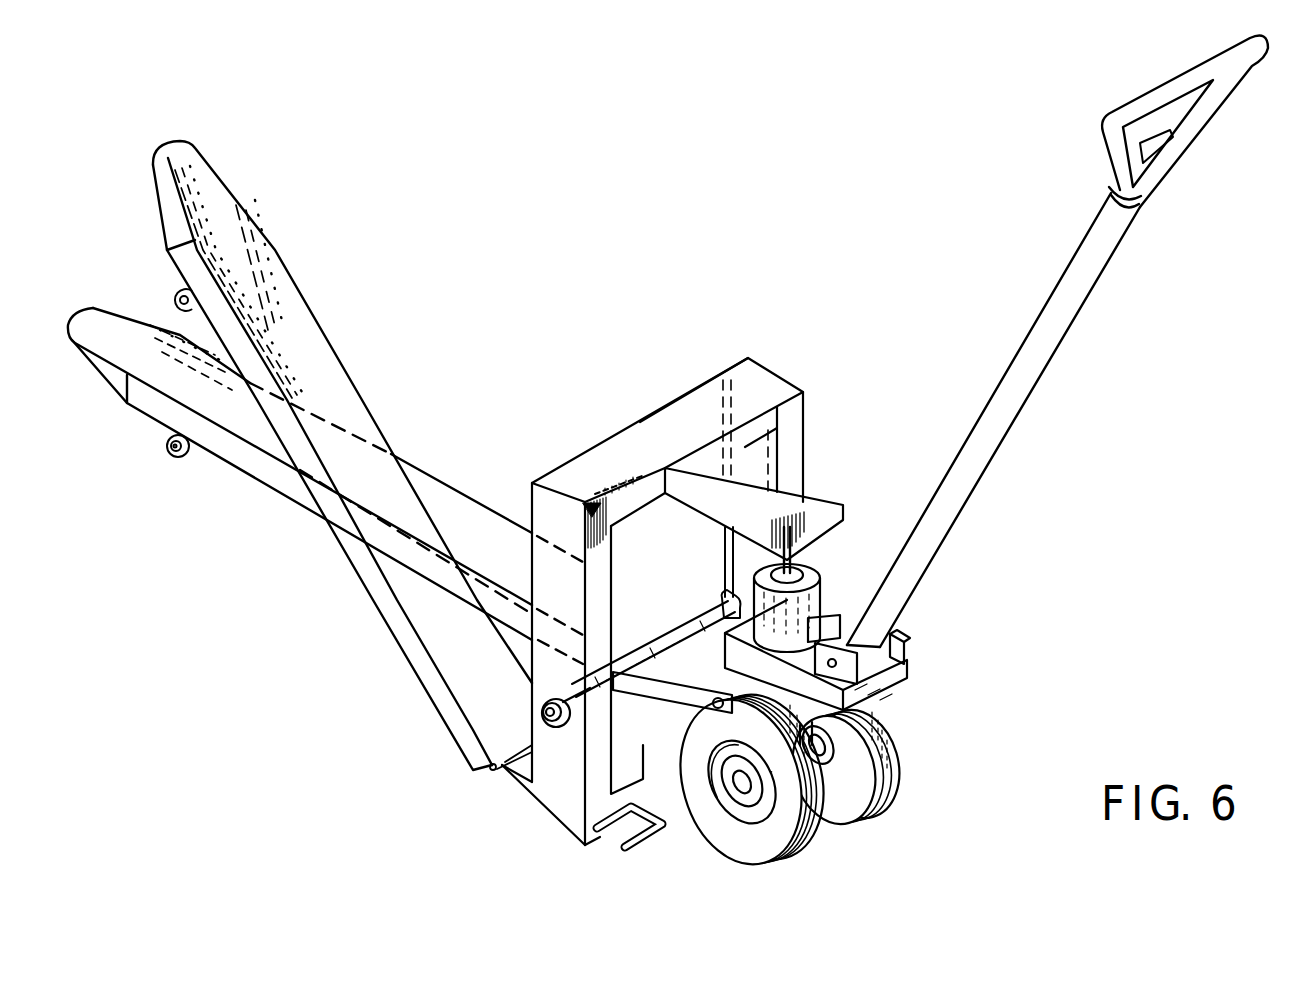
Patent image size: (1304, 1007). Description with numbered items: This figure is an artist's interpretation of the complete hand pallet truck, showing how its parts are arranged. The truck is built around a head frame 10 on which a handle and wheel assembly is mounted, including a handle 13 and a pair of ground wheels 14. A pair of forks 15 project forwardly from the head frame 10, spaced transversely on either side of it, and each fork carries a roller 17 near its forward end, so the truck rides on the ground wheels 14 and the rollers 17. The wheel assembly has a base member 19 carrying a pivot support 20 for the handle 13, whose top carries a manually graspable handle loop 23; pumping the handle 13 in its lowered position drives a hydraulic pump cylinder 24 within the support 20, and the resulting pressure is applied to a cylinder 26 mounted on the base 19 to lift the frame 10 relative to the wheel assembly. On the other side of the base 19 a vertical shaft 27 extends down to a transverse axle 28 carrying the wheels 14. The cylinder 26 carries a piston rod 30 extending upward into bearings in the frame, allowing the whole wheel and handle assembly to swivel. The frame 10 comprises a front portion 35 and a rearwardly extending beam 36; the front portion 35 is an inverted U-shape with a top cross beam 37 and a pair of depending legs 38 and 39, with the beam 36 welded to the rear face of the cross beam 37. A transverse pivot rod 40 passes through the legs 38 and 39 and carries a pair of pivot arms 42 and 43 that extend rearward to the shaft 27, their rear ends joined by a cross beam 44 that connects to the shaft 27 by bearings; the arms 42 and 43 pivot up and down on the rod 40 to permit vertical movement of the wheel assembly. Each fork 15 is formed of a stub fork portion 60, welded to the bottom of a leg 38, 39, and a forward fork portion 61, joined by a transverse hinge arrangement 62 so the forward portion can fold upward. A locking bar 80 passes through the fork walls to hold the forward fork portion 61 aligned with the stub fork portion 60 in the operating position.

The head frame 10 is at (571, 420).
The handle 13 is at (1053, 273).
The ground wheels 14 is at (817, 779).
The forks 15 is at (293, 262).
The rollers 17 is at (182, 292).
The base member 19 is at (908, 668).
The pivot support 20 is at (904, 645).
The handle loop 23 is at (1119, 96).
The hydraulic pump cylinder 24 is at (850, 613).
The cylinder 26 is at (825, 577).
The vertical shaft 27 is at (890, 708).
The transverse axle 28 is at (838, 747).
The piston rod 30 is at (728, 553).
The front portion 35 is at (579, 469).
The rearwardly extending beam 36 is at (815, 500).
The top cross beam 37 is at (690, 405).
The depending leg 38 is at (800, 427).
The depending leg 39 is at (528, 502).
The transverse pivot rod 40 is at (683, 636).
The pivot arm 42 is at (725, 597).
The pivot arm 43 is at (678, 703).
The cross beam 44 is at (694, 741).
The stub fork portion 60 is at (505, 792).
The forward fork portion 61 is at (460, 714).
The transverse hinge arrangement 62 is at (488, 773).
The locking bar 80 is at (652, 838).